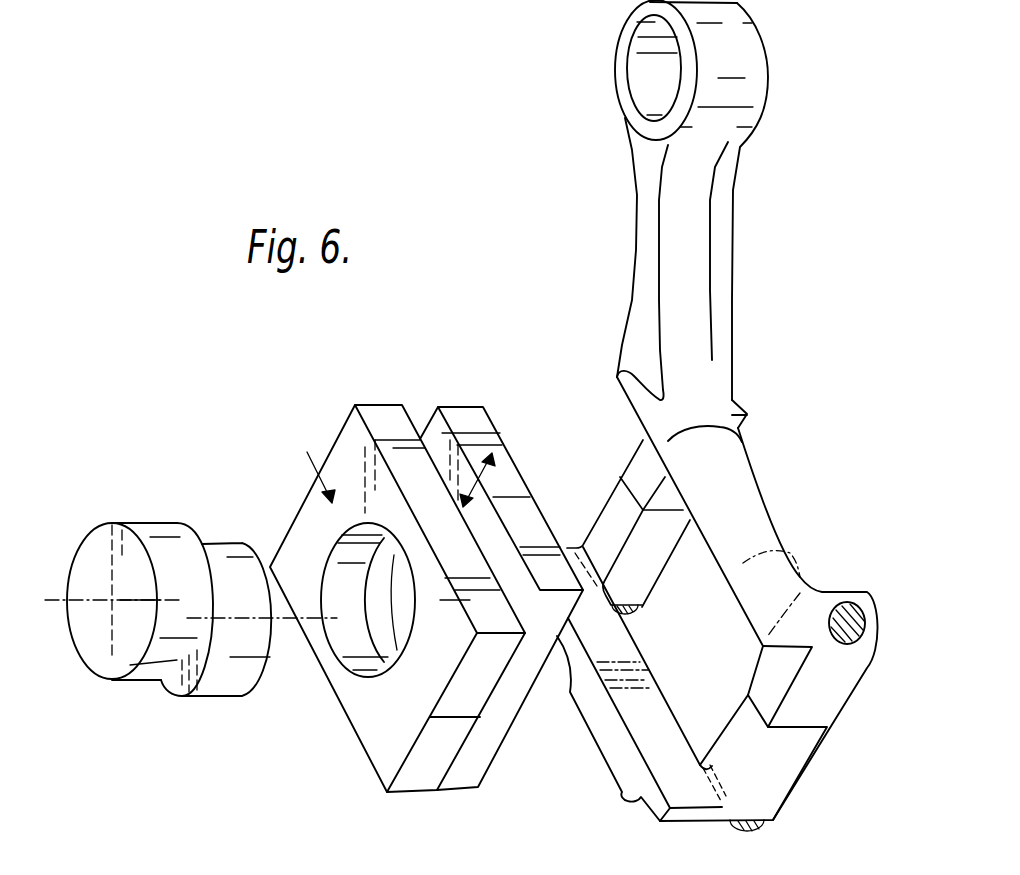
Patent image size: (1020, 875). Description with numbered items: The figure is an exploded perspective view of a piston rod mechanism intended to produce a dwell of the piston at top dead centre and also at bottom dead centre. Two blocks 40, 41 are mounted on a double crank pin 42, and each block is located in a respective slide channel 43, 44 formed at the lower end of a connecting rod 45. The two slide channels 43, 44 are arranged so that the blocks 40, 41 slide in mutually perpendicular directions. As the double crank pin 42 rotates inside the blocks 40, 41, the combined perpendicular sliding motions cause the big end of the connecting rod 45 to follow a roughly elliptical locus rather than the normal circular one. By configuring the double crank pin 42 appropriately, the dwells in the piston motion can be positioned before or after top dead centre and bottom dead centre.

The block 40 is at (343, 442).
The block 41 is at (493, 425).
The double crank pin 42 is at (174, 699).
The slide channel 43 is at (770, 687).
The slide channel 44 is at (647, 570).
The connecting rod 45 is at (720, 263).